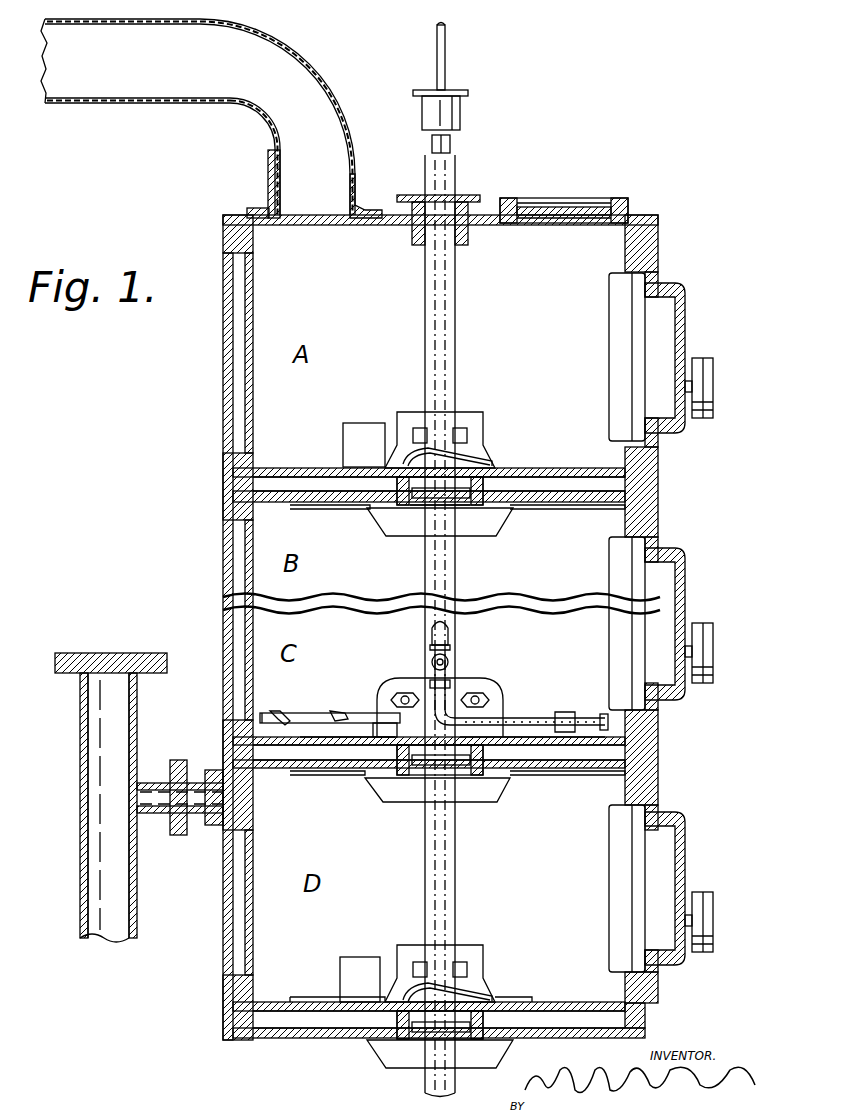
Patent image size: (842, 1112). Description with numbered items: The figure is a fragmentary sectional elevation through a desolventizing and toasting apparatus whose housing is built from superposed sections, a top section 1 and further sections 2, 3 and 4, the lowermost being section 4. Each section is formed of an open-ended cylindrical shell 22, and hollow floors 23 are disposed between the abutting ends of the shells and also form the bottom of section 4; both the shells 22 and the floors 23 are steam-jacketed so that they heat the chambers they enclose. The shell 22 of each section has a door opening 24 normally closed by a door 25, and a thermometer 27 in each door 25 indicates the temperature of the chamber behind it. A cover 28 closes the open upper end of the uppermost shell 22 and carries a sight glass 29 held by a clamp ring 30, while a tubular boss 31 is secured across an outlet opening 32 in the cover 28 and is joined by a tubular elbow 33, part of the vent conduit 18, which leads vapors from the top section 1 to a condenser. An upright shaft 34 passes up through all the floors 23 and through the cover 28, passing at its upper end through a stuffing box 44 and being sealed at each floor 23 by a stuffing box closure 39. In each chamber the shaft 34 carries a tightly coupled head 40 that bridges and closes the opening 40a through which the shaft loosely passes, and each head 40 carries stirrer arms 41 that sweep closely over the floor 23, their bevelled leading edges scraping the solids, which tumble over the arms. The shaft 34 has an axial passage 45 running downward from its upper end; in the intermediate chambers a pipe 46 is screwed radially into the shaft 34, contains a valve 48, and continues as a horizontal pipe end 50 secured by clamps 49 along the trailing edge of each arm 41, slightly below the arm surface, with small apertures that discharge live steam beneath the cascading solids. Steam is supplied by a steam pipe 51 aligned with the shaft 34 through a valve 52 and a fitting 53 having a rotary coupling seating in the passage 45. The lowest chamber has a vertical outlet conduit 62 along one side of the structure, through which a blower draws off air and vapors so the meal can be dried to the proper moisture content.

The top section 1 is at (220, 383).
The housing section 2 is at (200, 485).
The housing section 3 is at (220, 628).
The lowermost section 4 is at (220, 912).
The vent conduit 18 is at (82, 103).
The cylindrical shell 22 is at (253, 285).
The hollow floor 23 is at (300, 452).
The door opening 24 is at (655, 306).
The door 25 is at (684, 330).
The thermometer 27 is at (704, 386).
The cover 28 is at (658, 232).
The sight glass 29 is at (556, 208).
The clamp ring 30 is at (640, 214).
The tubular boss 31 is at (272, 184).
The outlet opening 32 is at (293, 225).
The tubular elbow 33 is at (230, 104).
The upright shaft 34 is at (456, 290).
The stuffing box closure 39 is at (470, 522).
The head 40 is at (483, 421).
The opening 40a is at (398, 500).
The stirrer arm 41 is at (495, 458).
The stuffing box 44 is at (468, 244).
The axial passage 45 is at (440, 315).
The pipe 46 is at (450, 628).
The valve 48 is at (452, 665).
The clamp 49 is at (288, 713).
The pipe end 50 is at (385, 713).
The steam pipe 51 is at (447, 45).
The valve 52 is at (460, 110).
The fitting 53 is at (451, 143).
The outlet conduit 62 is at (80, 888).